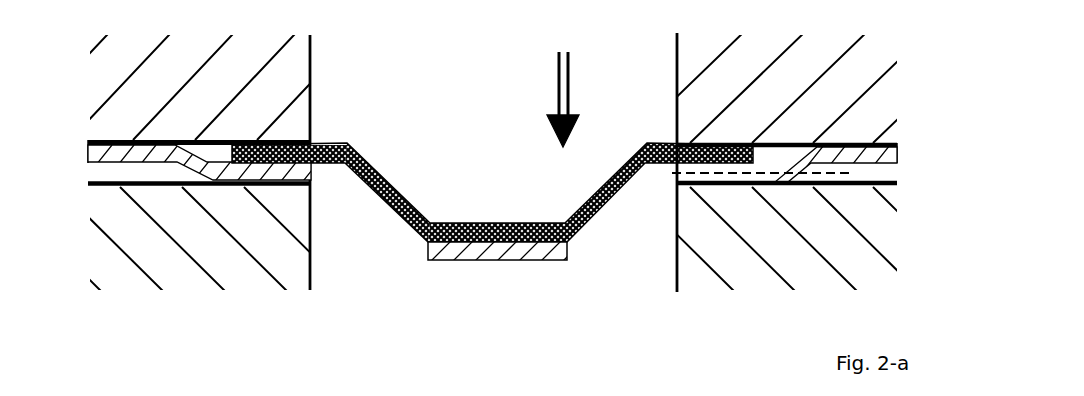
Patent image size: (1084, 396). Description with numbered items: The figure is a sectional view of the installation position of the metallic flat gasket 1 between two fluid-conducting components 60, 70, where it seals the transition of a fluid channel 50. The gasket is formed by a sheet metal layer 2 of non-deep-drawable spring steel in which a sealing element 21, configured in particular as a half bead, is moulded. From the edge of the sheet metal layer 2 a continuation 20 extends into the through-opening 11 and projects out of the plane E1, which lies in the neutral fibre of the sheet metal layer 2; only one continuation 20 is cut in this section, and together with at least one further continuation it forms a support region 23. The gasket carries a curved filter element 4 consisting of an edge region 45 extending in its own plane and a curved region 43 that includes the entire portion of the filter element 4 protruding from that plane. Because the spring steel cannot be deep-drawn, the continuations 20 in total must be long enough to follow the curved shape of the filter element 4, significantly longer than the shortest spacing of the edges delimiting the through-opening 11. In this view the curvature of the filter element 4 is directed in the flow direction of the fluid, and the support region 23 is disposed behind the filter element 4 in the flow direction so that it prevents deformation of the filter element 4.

The metallic flat gasket 1 is at (73, 159).
The sheet metal layer 2 is at (675, 188).
The filter element 4 is at (410, 222).
The through-opening 11 is at (501, 168).
The continuation 20 is at (497, 284).
The sealing element 21 is at (192, 165).
The support region 23 is at (503, 248).
The curved region 43 is at (385, 181).
The edge region 45 is at (332, 143).
The fluid channel 50 is at (503, 87).
The component 60 is at (795, 95).
The component 70 is at (795, 260).
The plane E1 is at (747, 177).